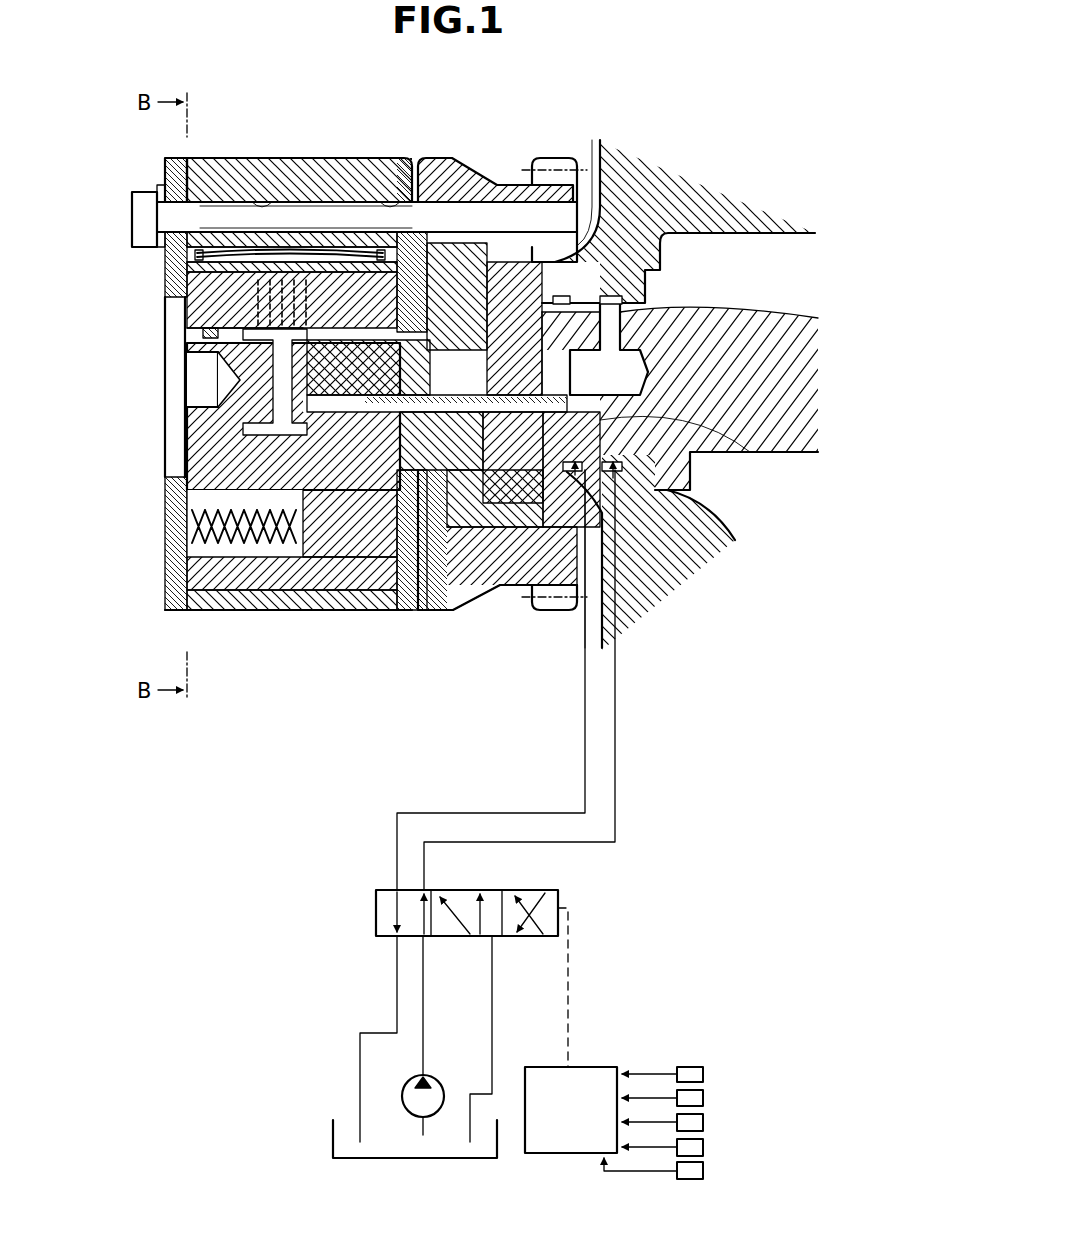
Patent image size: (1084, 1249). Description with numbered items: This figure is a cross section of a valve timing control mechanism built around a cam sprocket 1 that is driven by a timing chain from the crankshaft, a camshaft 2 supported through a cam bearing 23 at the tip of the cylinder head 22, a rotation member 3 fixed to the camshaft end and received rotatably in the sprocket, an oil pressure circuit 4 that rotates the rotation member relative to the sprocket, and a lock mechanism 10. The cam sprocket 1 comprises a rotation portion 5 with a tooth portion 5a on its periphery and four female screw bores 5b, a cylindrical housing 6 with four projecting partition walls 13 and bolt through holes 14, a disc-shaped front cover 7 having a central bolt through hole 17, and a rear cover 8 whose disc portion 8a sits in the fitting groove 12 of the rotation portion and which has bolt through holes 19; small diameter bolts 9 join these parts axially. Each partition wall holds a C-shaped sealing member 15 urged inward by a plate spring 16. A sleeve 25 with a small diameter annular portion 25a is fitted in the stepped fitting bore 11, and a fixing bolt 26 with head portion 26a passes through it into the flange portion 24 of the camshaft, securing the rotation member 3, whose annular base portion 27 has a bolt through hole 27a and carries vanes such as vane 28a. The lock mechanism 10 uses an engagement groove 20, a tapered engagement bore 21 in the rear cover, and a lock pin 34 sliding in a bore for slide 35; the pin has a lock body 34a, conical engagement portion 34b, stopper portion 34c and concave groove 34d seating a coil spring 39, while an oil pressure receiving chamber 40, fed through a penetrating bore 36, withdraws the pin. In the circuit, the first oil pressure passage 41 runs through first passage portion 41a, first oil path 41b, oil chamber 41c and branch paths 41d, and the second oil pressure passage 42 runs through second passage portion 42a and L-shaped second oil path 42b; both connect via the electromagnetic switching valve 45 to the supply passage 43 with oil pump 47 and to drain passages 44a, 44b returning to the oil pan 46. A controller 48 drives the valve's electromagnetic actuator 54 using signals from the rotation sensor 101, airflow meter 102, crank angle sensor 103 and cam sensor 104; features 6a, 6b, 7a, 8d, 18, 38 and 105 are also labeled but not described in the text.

The cam sprocket 1 is at (296, 157).
The camshaft 2 is at (808, 454).
The rotation member 3 is at (187, 488).
The oil pressure circuit 4 is at (625, 775).
The rotation portion 5 is at (472, 170).
The tooth portion 5a is at (552, 158).
The female screw bores 5b is at (592, 145).
The housing 6 is at (345, 160).
The housing bore 6a is at (187, 295).
The housing passage 6b is at (560, 285).
The front cover 7 is at (187, 570).
The sleeve port 7a is at (200, 330).
The rear cover 8 is at (425, 605).
The disc portion 8a is at (455, 600).
The drain port 8d is at (187, 455).
The small diameter bolts 9 is at (140, 215).
The lock mechanism 10 is at (360, 610).
The stepped fitting bore 11 is at (470, 582).
The fitting groove 12 is at (418, 260).
The partition walls 13 is at (225, 205).
The bolt through holes 14 is at (250, 228).
The sealing member 15 is at (195, 255).
The plate spring 16 is at (212, 160).
The bolt through hole 17 is at (187, 375).
The washer 18 is at (160, 195).
The bolt through holes 19 is at (400, 162).
The engagement groove 20 is at (460, 590).
The engagement bore 21 is at (390, 590).
The cylinder head 22 is at (700, 545).
The cam bearing 23 is at (670, 260).
The flange portion 24 is at (558, 595).
The sleeve 25 is at (515, 600).
The small diameter annular portion 25a is at (685, 454).
The fixing bolt 26 is at (282, 200).
The head portion 26a is at (222, 372).
The base portion 27 is at (318, 590).
The bolt through hole 27a is at (380, 445).
The vane 28a is at (187, 600).
The lock pin 34 is at (289, 592).
The lock body 34a is at (200, 490).
The engagement portion 34b is at (480, 620).
The stopper portion 34c is at (195, 610).
The concave groove 34d is at (225, 612).
The bore for slide 35 is at (268, 557).
The penetrating bore 36 is at (232, 560).
The valve body 38 is at (555, 300).
The coil spring 39 is at (195, 540).
The oil pressure receiving chamber 40 is at (180, 515).
The first oil pressure passage 41 is at (618, 806).
The first passage portion 41a is at (625, 365).
The first oil path 41b is at (660, 306).
The oil chamber 41c is at (275, 392).
The branch paths 41d is at (260, 292).
The second oil pressure passage 42 is at (580, 762).
The second passage portion 42a is at (640, 560).
The second oil path 42b is at (740, 452).
The supply passage 43 is at (425, 1010).
The first drain passage 44a is at (397, 985).
The drain passage 44b is at (494, 1020).
The electromagnetic switching valve 45 is at (485, 885).
The oil pan 46 is at (333, 1140).
The oil pump 47 is at (436, 1078).
The controller 48 is at (600, 1067).
The electromagnetic actuator 54 is at (562, 895).
The rotation sensor 101 is at (703, 1072).
The airflow meter 102 is at (703, 1098).
The crank angle sensor 103 is at (703, 1122).
The cam sensor 104 is at (703, 1147).
The sensor 105 is at (703, 1172).